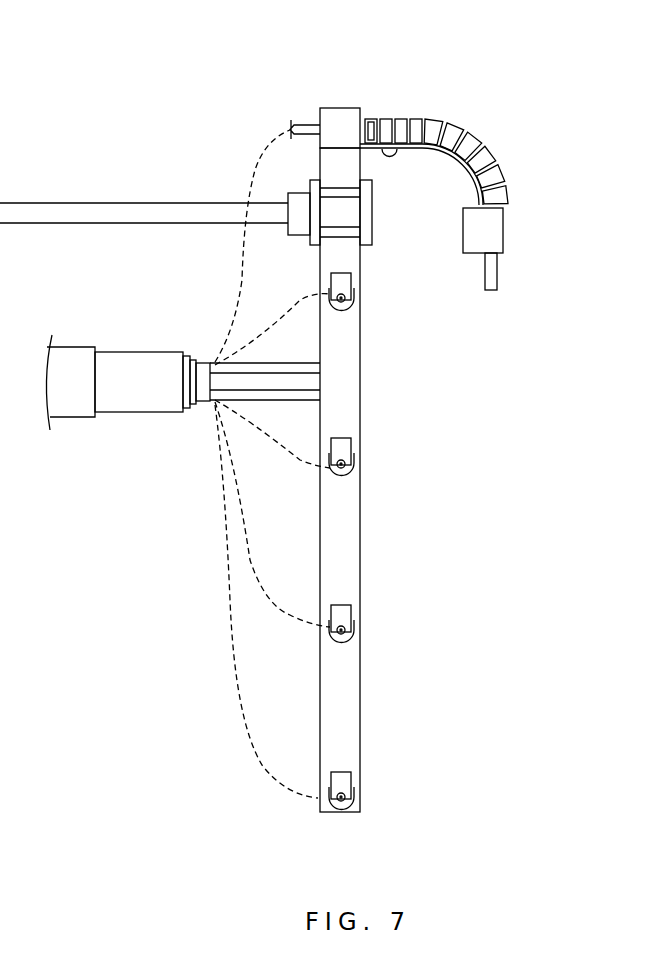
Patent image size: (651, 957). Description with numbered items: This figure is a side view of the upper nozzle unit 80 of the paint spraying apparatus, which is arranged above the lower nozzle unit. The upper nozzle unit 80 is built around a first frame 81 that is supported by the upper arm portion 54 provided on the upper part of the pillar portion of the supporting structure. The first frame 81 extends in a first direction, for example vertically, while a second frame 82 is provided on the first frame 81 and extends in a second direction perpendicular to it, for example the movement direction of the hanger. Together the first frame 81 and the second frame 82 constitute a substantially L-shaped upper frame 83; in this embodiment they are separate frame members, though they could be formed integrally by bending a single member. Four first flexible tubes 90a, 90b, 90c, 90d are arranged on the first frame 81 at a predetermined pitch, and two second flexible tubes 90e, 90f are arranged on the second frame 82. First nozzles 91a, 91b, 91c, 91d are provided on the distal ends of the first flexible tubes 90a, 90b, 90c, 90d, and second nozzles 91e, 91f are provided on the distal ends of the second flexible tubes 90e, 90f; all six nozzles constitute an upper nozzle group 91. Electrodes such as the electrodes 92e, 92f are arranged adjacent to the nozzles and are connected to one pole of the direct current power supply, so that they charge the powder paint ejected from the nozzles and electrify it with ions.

The upper nozzle unit 80 is at (206, 72).
The first frame 81 is at (348, 393).
The second frame 82 is at (343, 108).
The upper frame 83 is at (374, 717).
The upper arm portion 54 is at (110, 203).
The first flexible tube 90a is at (352, 797).
The first flexible tube 90b is at (352, 630).
The first flexible tube 90c is at (352, 463).
The first flexible tube 90d is at (352, 296).
The second flexible tube 90e is at (459, 117).
The second flexible tube 90f is at (470, 132).
The upper nozzle group 91 is at (539, 235).
The first nozzle 91a is at (346, 810).
The first nozzle 91b is at (346, 642).
The first nozzle 91c is at (346, 475).
The first nozzle 91d is at (350, 310).
The second nozzle 91e is at (503, 258).
The second nozzle 91f is at (497, 275).
The electrode 92e is at (408, 150).
The electrode 92f is at (383, 118).